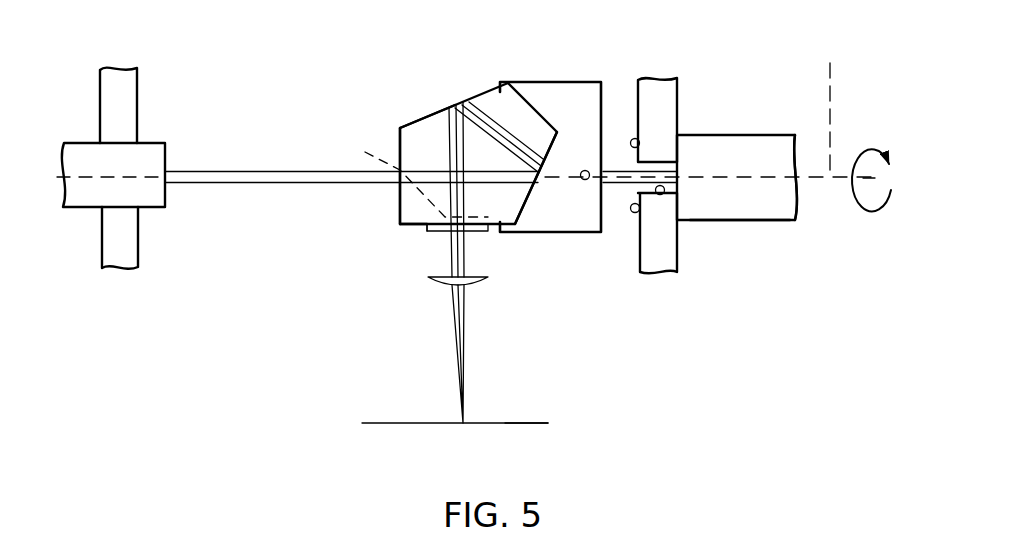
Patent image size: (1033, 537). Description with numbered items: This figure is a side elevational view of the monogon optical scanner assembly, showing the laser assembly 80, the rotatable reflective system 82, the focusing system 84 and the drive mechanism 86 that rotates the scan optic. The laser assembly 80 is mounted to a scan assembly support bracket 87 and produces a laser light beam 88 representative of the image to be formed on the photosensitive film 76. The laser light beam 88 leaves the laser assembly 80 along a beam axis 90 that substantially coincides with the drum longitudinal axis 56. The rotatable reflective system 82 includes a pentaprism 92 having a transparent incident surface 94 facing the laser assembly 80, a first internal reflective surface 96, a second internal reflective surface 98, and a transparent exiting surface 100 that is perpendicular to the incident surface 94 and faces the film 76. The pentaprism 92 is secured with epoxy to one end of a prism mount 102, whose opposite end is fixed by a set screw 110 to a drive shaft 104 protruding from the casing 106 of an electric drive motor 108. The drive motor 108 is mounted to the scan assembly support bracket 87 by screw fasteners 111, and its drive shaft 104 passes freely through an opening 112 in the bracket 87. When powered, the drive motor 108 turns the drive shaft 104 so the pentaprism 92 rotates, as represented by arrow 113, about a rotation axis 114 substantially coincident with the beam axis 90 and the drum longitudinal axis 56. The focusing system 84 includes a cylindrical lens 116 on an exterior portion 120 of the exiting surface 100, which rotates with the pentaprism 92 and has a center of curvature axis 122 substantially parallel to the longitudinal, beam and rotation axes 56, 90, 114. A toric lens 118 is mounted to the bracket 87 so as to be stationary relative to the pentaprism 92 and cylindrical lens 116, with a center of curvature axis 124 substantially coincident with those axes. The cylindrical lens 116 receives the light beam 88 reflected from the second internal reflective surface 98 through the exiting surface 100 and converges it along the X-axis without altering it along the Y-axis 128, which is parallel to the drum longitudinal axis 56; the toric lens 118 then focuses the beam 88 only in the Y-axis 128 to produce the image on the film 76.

The drum longitudinal axis 56 is at (836, 105).
The photosensitive film 76 is at (392, 425).
The laser assembly 80 is at (152, 137).
The rotatable reflective system 82 is at (400, 195).
The focusing system 84 is at (479, 323).
The drive mechanism 86 is at (718, 134).
The scan assembly support bracket 87 is at (130, 245).
The laser light beam 88 is at (235, 168).
The beam axis 90 is at (836, 105).
The pentaprism 92 is at (401, 220).
The incident surface 94 is at (400, 145).
The first internal reflective surface 96 is at (524, 198).
The second internal reflective surface 98 is at (420, 128).
The exiting surface 100 is at (410, 227).
The prism mount 102 is at (575, 222).
The drive shaft 104 is at (633, 181).
The casing 106 is at (791, 222).
The electric drive motor 108 is at (740, 222).
The set screw 110 is at (585, 170).
The screw fasteners 111 is at (631, 141).
The opening 112 is at (664, 192).
The arrow 113 is at (874, 211).
The rotation axis 114 is at (836, 105).
The cylindrical lens 116 is at (435, 232).
The toric lens 118 is at (471, 288).
The exterior portion 120 is at (493, 232).
The center of curvature axis 122 is at (407, 178).
The center of curvature axis 124 is at (836, 105).
The Y-axis 128 is at (512, 423).